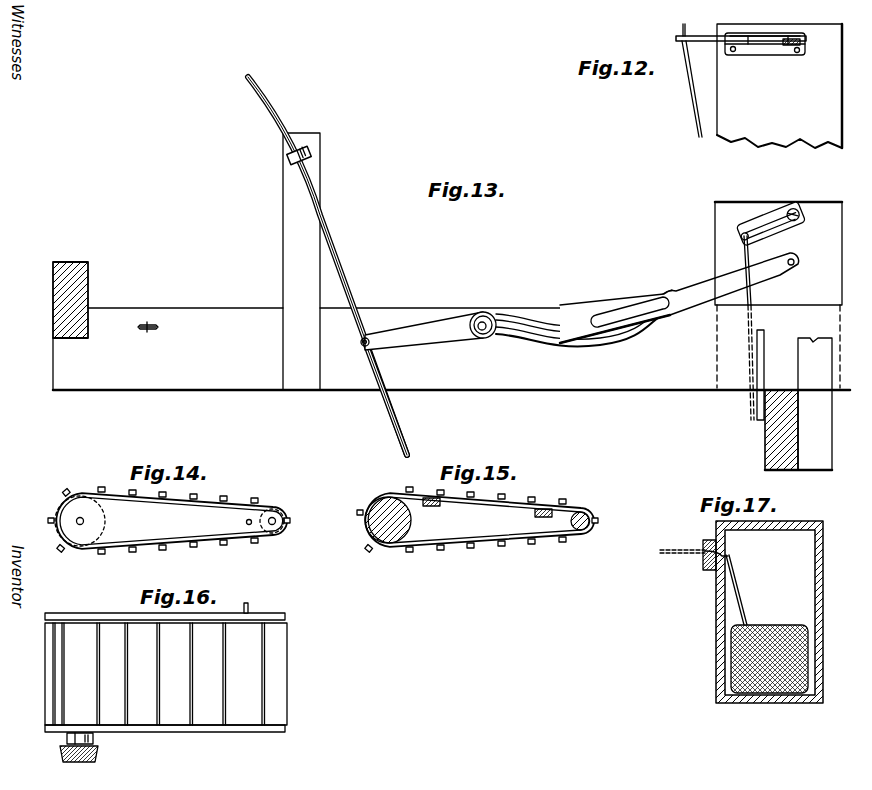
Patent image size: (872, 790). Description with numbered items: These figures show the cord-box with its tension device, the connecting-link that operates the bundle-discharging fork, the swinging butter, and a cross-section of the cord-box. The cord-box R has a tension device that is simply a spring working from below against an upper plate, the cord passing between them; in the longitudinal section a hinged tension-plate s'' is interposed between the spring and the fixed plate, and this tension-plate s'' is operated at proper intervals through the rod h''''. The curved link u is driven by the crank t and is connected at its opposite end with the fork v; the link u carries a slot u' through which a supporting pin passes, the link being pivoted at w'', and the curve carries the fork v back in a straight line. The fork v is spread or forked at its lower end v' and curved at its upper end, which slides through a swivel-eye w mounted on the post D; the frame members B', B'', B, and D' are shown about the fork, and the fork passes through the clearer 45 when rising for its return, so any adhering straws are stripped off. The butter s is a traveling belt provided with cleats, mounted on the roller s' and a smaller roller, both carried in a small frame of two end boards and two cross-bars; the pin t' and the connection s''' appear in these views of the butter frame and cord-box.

In FIG. 12, the tension-plate s'' is at (765, 28).
In FIG. 13, the tension-plate s'' is at (770, 210).
In FIG. 14, the tension-plate s'' is at (288, 521).
In FIG. 12, the rod h'''' is at (733, 80).
In FIG. 13, the rod h'''' is at (723, 328).
In FIG. 12, the reservoir casing R is at (779, 86).
In FIG. 13, the reservoir casing R is at (778, 295).
In FIG. 17, the reservoir casing R is at (769, 612).
In FIG. 13, the swivel-eye w is at (315, 156).
In FIG. 13, the post D is at (289, 261).
In FIG. 13, the frame block B'' is at (87, 296).
In FIG. 13, the frame bar B' is at (350, 333).
In FIG. 13, the clearer 45 is at (166, 321).
In FIG. 13, the fork v is at (327, 266).
In FIG. 16, the fork v is at (87, 747).
In FIG. 13, the lower end of fork v' is at (395, 398).
In FIG. 13, the link arm with collar w'' is at (431, 338).
In FIG. 13, the slot u' is at (584, 325).
In FIG. 13, the link u is at (679, 298).
In FIG. 13, the frame block B is at (767, 430).
In FIG. 13, the post D' is at (798, 404).
In FIG. 14, the roller s' is at (91, 521).
In FIG. 15, the roller s' is at (477, 519).
In FIG. 14, the pin t' is at (241, 523).
In FIG. 14, the butter s is at (169, 519).
In FIG. 16, the butter s is at (166, 664).
In FIG. 16, the crank t is at (264, 599).
In FIG. 17, the wire connection s''' is at (694, 560).